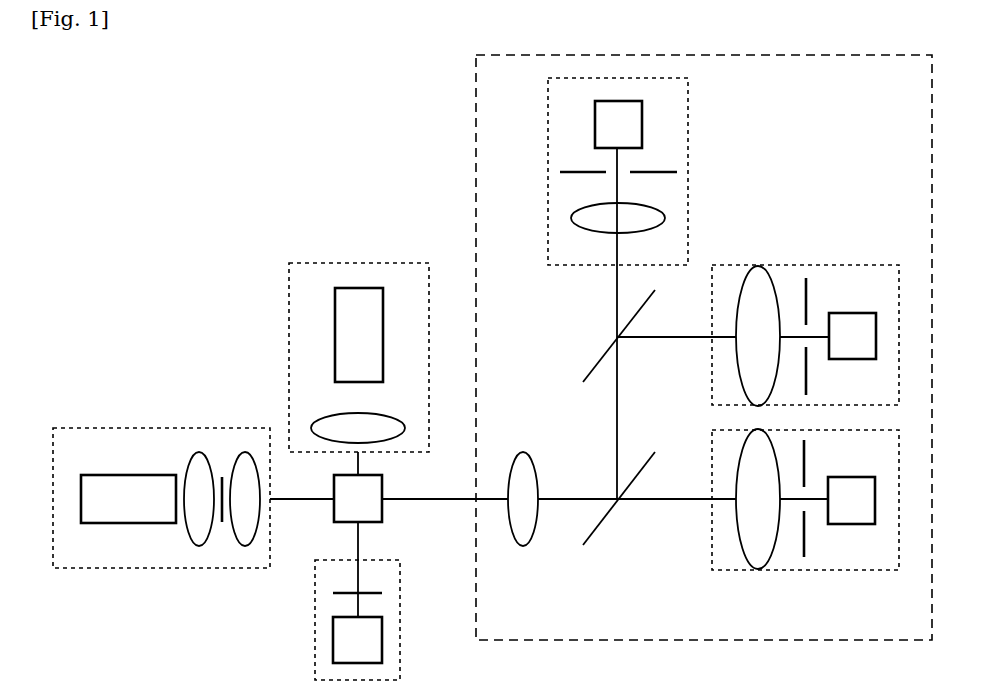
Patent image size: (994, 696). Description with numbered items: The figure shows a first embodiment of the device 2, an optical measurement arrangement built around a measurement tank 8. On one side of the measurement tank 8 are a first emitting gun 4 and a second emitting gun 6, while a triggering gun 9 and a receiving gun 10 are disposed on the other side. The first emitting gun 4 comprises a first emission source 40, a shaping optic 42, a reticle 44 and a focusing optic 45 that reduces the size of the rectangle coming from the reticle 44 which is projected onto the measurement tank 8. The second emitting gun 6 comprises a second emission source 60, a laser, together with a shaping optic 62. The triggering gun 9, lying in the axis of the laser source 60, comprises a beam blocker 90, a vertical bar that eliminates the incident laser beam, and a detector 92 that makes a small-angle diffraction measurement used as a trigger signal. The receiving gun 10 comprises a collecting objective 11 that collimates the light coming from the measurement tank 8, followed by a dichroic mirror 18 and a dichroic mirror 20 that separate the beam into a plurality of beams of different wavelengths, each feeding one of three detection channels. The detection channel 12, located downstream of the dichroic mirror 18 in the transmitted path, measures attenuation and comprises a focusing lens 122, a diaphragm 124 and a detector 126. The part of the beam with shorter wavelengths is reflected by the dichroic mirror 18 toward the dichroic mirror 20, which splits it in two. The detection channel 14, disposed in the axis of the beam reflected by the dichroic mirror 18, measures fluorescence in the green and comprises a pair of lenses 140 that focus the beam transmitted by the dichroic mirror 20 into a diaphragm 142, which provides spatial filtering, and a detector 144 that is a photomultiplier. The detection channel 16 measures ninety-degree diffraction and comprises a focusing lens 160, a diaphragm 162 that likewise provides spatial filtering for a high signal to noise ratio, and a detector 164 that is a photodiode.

The device 2 is at (290, 219).
The first emitting gun 4 is at (161, 479).
The first emission source 40 is at (128, 499).
The shaping optic 42 is at (199, 499).
The reticle 44 is at (223, 519).
The focusing optic 45 is at (245, 499).
The second emitting gun 6 is at (359, 342).
The second emission source 60 is at (359, 335).
The shaping optic 62 is at (358, 428).
The measurement tank 8 is at (358, 498).
The triggering gun 9 is at (369, 620).
The beam blocker 90 is at (363, 604).
The detector 92 is at (357, 640).
The receiving gun 10 is at (704, 363).
The collecting objective 11 is at (523, 499).
The detection channel 12 is at (810, 515).
The focusing lens 122 is at (758, 499).
The diaphragm 124 is at (825, 499).
The detector 126 is at (851, 500).
The detection channel 14 is at (632, 171).
The pair of lenses 140 is at (618, 218).
The diaphragm 142 is at (618, 185).
The detector 144 is at (618, 124).
The detection channel 16 is at (805, 324).
The focusing lens 160 is at (758, 336).
The diaphragm 162 is at (827, 336).
The detector 164 is at (852, 336).
The dichroic mirror 18 is at (603, 500).
The dichroic mirror 20 is at (604, 336).